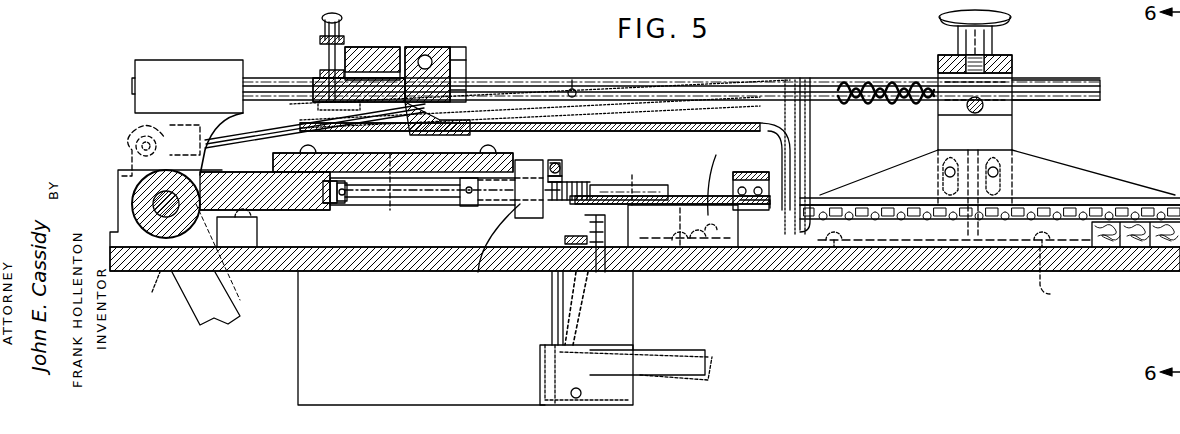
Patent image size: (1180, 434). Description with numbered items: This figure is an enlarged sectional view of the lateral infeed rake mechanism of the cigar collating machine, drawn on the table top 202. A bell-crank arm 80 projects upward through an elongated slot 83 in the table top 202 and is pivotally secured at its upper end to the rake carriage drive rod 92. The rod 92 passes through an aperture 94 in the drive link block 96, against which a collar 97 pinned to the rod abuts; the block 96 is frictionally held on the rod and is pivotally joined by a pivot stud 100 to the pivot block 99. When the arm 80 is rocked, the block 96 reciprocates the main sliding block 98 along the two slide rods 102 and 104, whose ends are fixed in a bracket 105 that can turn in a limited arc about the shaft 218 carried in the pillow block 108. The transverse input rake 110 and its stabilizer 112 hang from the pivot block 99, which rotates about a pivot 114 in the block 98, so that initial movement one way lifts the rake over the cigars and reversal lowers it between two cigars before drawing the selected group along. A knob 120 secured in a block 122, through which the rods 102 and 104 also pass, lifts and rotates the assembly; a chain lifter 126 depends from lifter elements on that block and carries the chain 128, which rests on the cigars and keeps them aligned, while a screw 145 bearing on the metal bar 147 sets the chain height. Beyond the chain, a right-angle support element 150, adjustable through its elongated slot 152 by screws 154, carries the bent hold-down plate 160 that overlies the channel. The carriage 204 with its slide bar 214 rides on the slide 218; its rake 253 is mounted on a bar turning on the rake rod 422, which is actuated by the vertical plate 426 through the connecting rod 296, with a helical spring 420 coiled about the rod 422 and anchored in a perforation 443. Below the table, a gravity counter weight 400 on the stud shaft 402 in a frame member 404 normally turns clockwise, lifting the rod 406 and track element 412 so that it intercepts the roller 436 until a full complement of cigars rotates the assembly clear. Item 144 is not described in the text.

The bracket 105 is at (160, 66).
The shaft 218 is at (128, 190).
The rake carriage drive rod 92 is at (270, 128).
The slide bar 214 is at (250, 166).
The pillow block 108 is at (253, 228).
The collar 97 is at (334, 205).
The drive link block 96 is at (375, 150).
The aperture 94 is at (390, 210).
The pivot stud 100 is at (426, 182).
The carriage 204 is at (455, 180).
The track element 412 is at (575, 219).
The vertical plate 426 is at (491, 255).
The main sliding block 98 is at (370, 47).
The pivot block 99 is at (424, 47).
The pivot 114 is at (450, 50).
The slide rod 102 is at (521, 78).
The slide rod 104 is at (633, 78).
The transverse input rake 110 is at (735, 128).
The stabilizer 112 is at (700, 136).
The connecting rod 296 is at (548, 160).
The helical spring 420 is at (572, 180).
The perforation 443 is at (633, 176).
The rake rod 422 is at (652, 188).
The right-angle support element 150 is at (738, 192).
The plate 160 is at (715, 178).
The rake 253 is at (730, 235).
The elongated slot 152 is at (648, 272).
The screws 154 is at (708, 240).
The return spring 144 is at (862, 78).
The knob 120 is at (940, 20).
The block 122 is at (1014, 66).
The screw 145 is at (973, 150).
The chain lifter 126 is at (1075, 176).
The chain 128 is at (1137, 208).
The metal bar 147 is at (955, 269).
The table top 202 is at (386, 272).
The frame member 404 is at (298, 357).
The stud shaft 402 is at (572, 392).
The counter weight 400 is at (696, 352).
The rod 406 is at (552, 298).
The roller 436 is at (622, 272).
The arm 80 is at (196, 318).
The elongated slot 83 is at (147, 289).